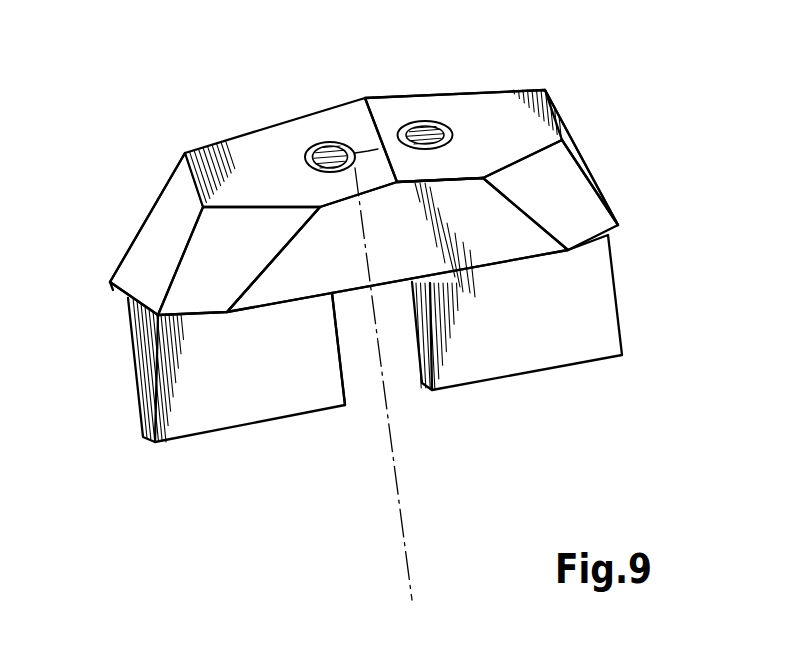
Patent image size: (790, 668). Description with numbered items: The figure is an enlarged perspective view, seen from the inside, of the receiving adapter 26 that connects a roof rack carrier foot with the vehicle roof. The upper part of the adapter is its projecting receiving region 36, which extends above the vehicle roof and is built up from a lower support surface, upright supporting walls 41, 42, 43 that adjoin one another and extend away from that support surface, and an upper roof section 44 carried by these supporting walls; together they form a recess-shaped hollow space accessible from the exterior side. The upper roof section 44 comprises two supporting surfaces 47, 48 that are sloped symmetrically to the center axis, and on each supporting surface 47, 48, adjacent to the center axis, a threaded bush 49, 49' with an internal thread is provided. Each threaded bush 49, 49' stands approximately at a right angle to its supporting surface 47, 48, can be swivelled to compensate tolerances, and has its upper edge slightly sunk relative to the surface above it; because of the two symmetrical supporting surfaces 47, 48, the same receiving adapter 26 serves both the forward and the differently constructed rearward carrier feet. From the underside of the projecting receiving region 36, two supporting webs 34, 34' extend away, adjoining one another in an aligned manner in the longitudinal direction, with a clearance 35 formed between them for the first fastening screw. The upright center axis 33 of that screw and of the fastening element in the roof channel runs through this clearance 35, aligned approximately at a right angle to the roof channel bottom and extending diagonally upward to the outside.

The receiving adapter 26 is at (376, 300).
The upright center axis 33 is at (398, 487).
The supporting web 34 is at (517, 337).
The supporting web 34' is at (236, 399).
The clearance 35 is at (365, 365).
The projecting receiving region 36 is at (128, 245).
The supporting wall 41 is at (475, 237).
The supporting wall 42 is at (582, 178).
The supporting wall 43 is at (197, 257).
The upper roof section 44 is at (456, 84).
The supporting surface 47 is at (507, 100).
The supporting surface 48 is at (240, 153).
The threaded bush 49 is at (405, 87).
The threaded bush 49' is at (309, 111).